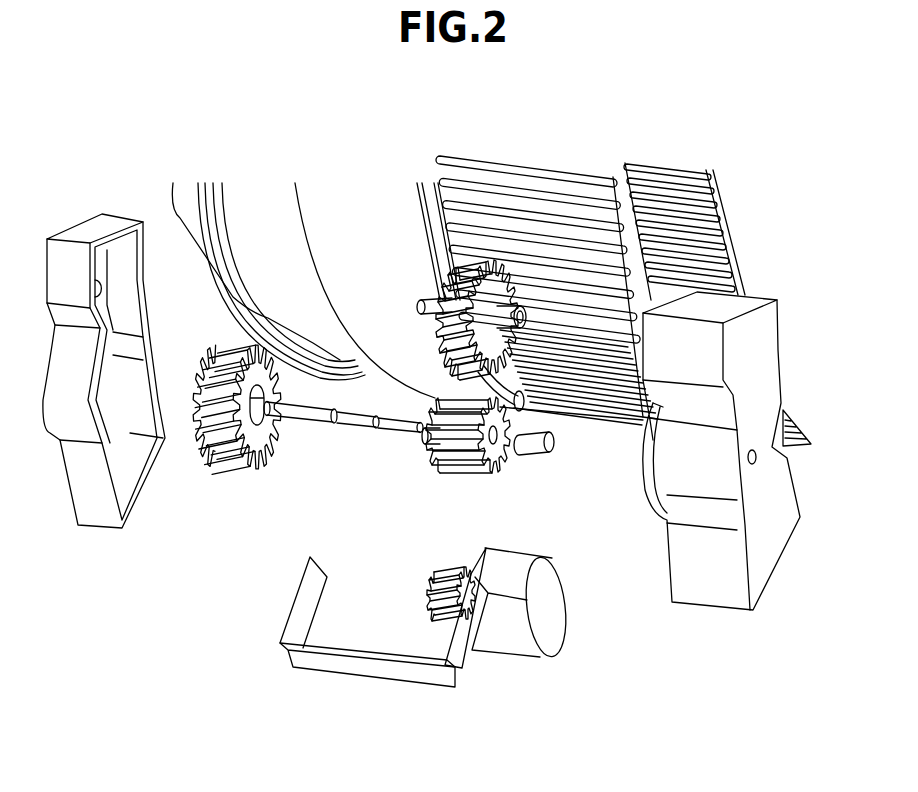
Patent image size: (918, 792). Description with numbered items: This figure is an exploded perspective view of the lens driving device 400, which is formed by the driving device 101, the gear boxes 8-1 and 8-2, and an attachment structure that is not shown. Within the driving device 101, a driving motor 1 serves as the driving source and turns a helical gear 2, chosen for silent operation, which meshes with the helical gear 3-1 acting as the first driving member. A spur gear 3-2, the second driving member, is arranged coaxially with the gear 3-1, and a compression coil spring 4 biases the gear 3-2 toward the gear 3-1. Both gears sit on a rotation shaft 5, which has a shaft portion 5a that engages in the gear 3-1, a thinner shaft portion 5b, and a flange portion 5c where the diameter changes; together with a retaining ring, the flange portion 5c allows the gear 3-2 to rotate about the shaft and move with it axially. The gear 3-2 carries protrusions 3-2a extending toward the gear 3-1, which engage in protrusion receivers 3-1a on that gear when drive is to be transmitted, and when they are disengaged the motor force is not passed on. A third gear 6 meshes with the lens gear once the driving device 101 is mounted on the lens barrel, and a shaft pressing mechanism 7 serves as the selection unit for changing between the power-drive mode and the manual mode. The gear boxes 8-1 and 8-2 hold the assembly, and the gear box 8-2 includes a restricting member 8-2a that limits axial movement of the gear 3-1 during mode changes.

The driving motor 1 is at (555, 612).
The gear 2 is at (433, 593).
The gear (first driving member) 3-1 is at (220, 442).
The protrusion receivers 3-1a is at (263, 447).
The gear (second driving member) 3-2 is at (447, 464).
The protrusions 3-2a is at (430, 445).
The compression coil spring 4 is at (533, 450).
The rotation shaft 5 is at (279, 328).
The shaft portion 5a is at (303, 422).
The shaft portion 5b is at (360, 424).
The flange portion 5c is at (331, 421).
The gear (third driving member) 6 is at (500, 264).
The shaft pressing mechanism 7 is at (457, 663).
The gear box 8-1 is at (63, 404).
The gear box 8-2 is at (708, 451).
The restricting member 8-2a is at (643, 500).
The driving device 101 is at (723, 758).
The lens driving device 400 is at (818, 476).